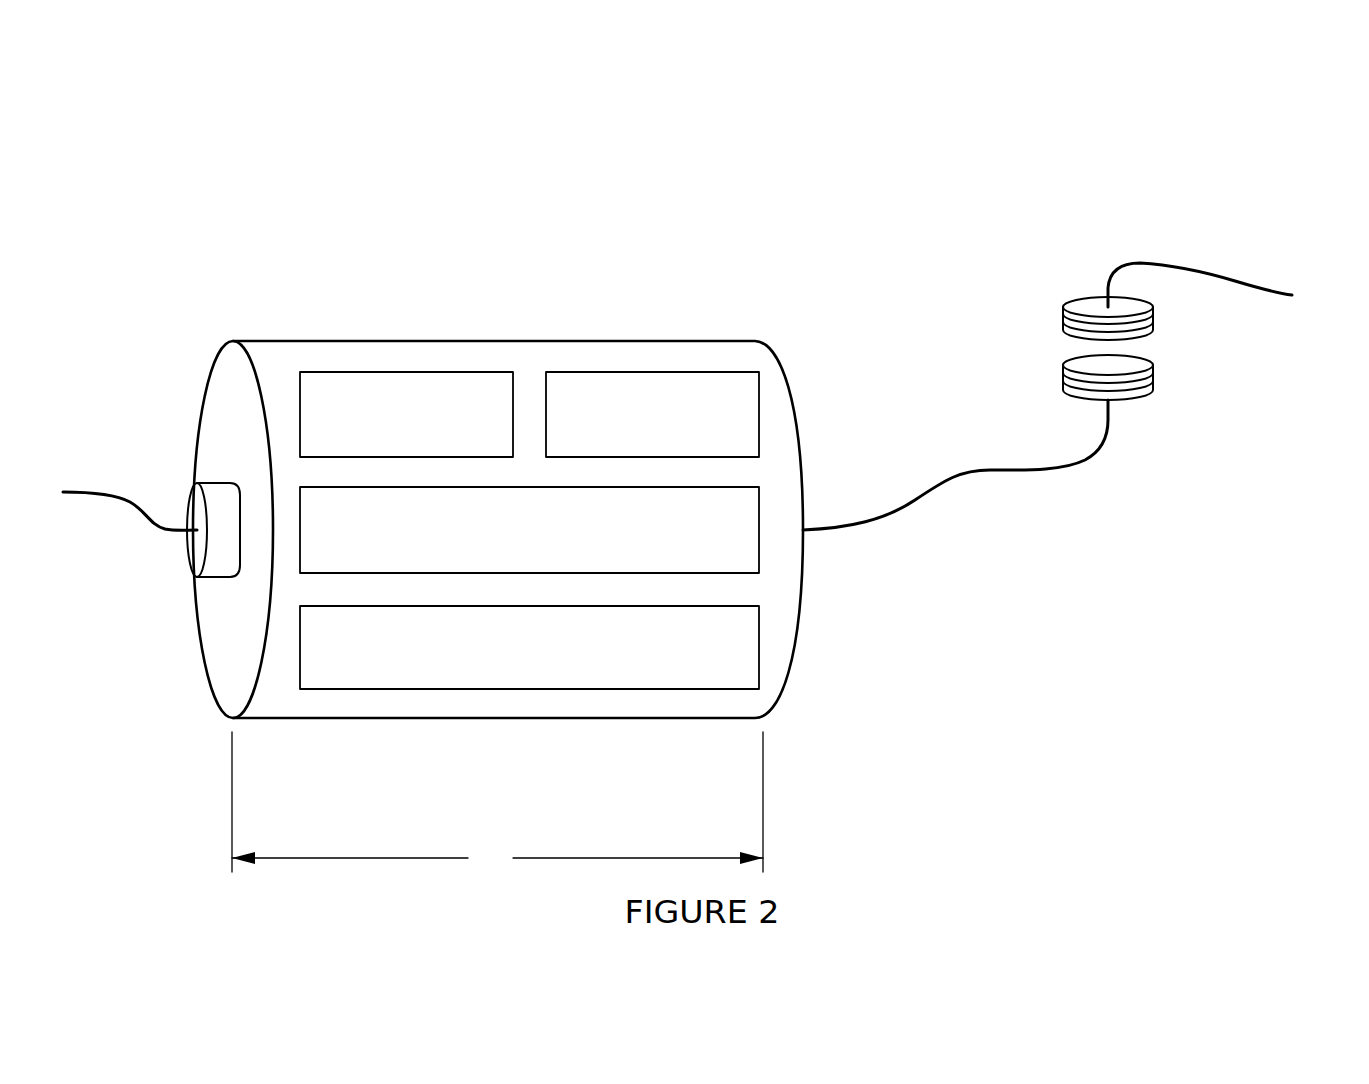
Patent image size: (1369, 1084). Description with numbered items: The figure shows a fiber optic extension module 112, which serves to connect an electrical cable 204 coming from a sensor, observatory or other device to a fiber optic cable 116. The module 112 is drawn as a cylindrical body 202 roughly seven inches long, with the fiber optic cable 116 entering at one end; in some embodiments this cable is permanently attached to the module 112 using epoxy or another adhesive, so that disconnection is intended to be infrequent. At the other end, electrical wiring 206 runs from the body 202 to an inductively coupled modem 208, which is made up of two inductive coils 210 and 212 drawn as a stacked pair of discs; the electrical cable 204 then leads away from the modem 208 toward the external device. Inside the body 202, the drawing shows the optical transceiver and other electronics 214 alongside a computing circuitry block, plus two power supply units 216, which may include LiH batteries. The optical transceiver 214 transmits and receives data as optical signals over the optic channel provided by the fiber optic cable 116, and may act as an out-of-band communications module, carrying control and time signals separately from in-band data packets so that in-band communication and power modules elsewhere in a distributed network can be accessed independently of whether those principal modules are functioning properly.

The fiber optic extension module 112 is at (1253, 110).
The fiber optic cable 116 is at (133, 503).
The housing 202 is at (755, 342).
The electrical cable 204 is at (1268, 288).
The electrical wiring 206 is at (897, 515).
The inductively coupled modem 208 is at (1175, 356).
The inductive coil 210 is at (1068, 322).
The inductive coil 212 is at (1068, 380).
The optical transceiver 214 is at (358, 373).
The power supply unit 216 is at (359, 689).